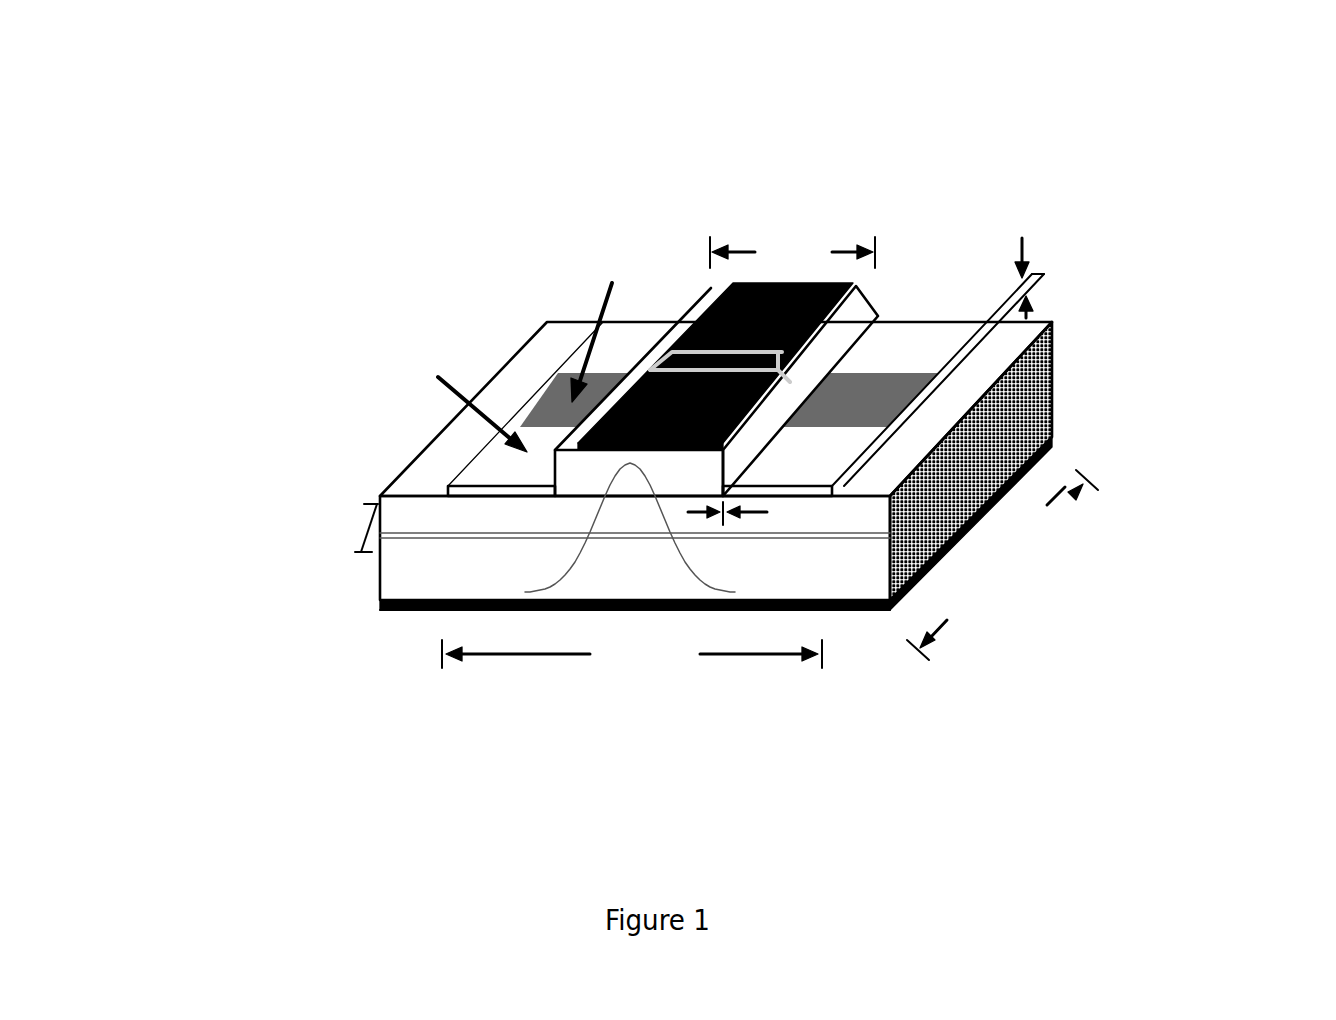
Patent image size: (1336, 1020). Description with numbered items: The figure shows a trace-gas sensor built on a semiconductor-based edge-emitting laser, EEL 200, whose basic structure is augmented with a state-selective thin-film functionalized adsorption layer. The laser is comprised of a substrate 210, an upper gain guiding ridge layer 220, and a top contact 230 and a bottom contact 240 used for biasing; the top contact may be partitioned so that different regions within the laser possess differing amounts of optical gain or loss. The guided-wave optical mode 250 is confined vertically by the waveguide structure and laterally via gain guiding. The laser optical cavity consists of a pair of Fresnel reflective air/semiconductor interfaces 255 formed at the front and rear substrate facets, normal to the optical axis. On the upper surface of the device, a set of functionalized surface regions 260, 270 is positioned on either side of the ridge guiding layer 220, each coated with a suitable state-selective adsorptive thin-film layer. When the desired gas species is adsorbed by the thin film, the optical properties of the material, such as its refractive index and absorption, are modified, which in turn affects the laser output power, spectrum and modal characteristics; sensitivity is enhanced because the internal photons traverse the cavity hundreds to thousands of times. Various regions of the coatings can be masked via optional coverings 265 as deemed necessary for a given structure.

The edge-emitting laser 200 is at (216, 117).
The substrate 210 is at (1035, 403).
The upper guiding ridge layer 220 is at (858, 328).
The top contact 230 is at (858, 284).
The bottom contact 240 is at (853, 612).
The guided-wave optical mode 250 is at (590, 557).
The Fresnel reflective air/semiconductor interfaces 255 is at (577, 513).
The functionalized surface region 260 is at (495, 460).
The covering 265 is at (867, 412).
The functionalized surface region 270 is at (1048, 332).